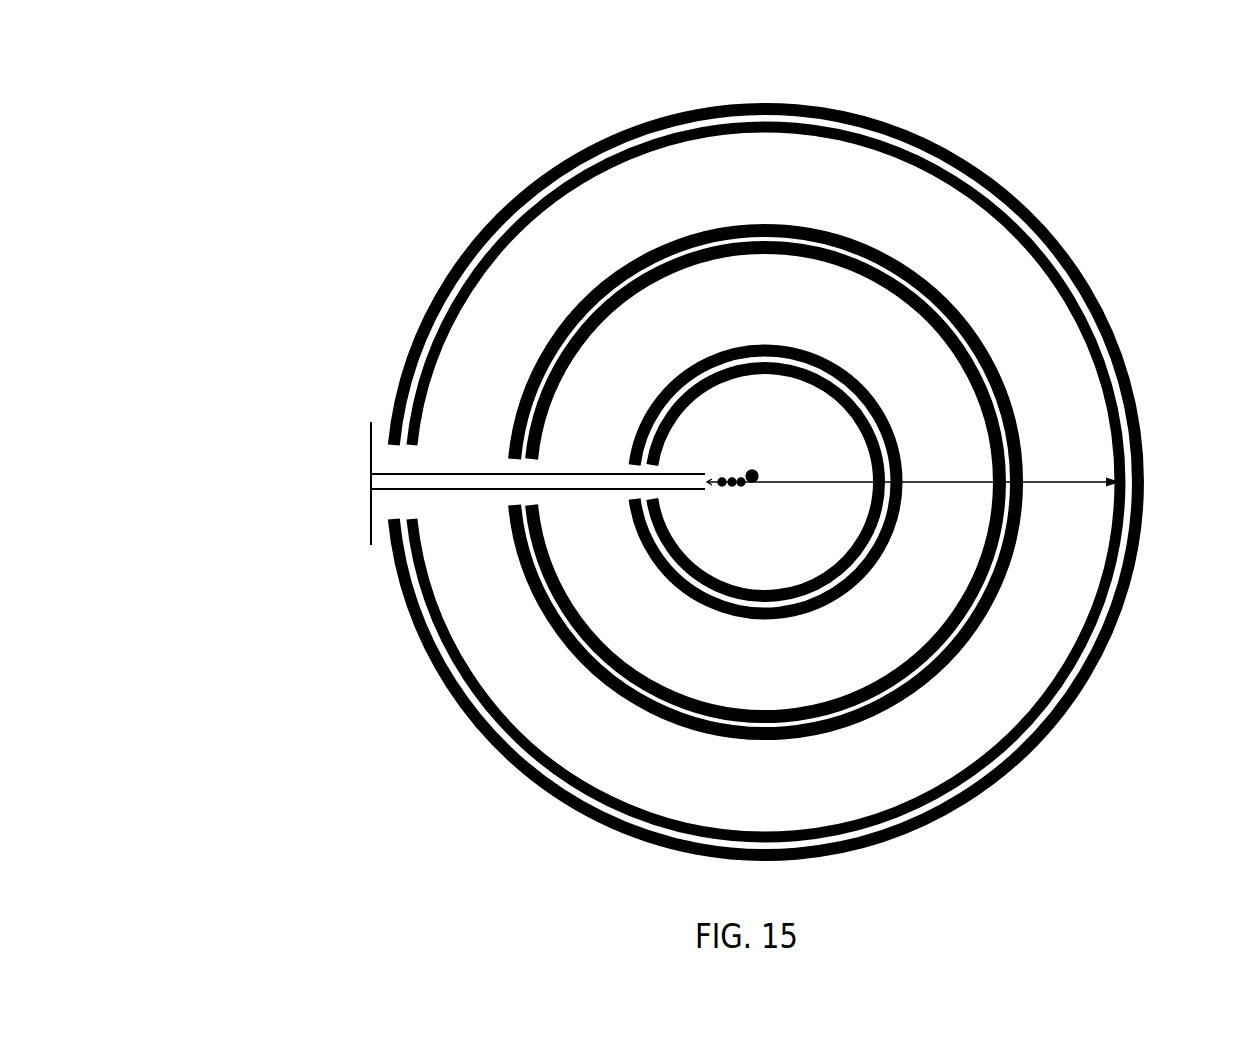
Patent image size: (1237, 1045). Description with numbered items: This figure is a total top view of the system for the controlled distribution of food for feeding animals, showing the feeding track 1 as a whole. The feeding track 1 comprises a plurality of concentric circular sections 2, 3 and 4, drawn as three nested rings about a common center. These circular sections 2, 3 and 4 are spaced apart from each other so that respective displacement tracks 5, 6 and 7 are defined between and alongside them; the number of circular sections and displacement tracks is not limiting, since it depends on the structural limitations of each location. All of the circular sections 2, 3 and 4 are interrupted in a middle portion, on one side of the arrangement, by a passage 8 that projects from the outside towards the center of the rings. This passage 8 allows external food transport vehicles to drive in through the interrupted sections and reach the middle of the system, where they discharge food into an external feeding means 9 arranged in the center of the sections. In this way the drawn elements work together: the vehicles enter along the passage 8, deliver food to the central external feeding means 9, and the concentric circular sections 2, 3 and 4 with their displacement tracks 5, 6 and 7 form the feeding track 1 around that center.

The feeding track 1 is at (267, 595).
The circular section 2 is at (620, 558).
The circular section 3 is at (967, 682).
The circular section 4 is at (977, 138).
The displacement track 5 is at (810, 605).
The displacement track 6 is at (777, 732).
The displacement track 7 is at (1113, 602).
The passage 8 is at (365, 481).
The external feeding means 9 is at (735, 498).